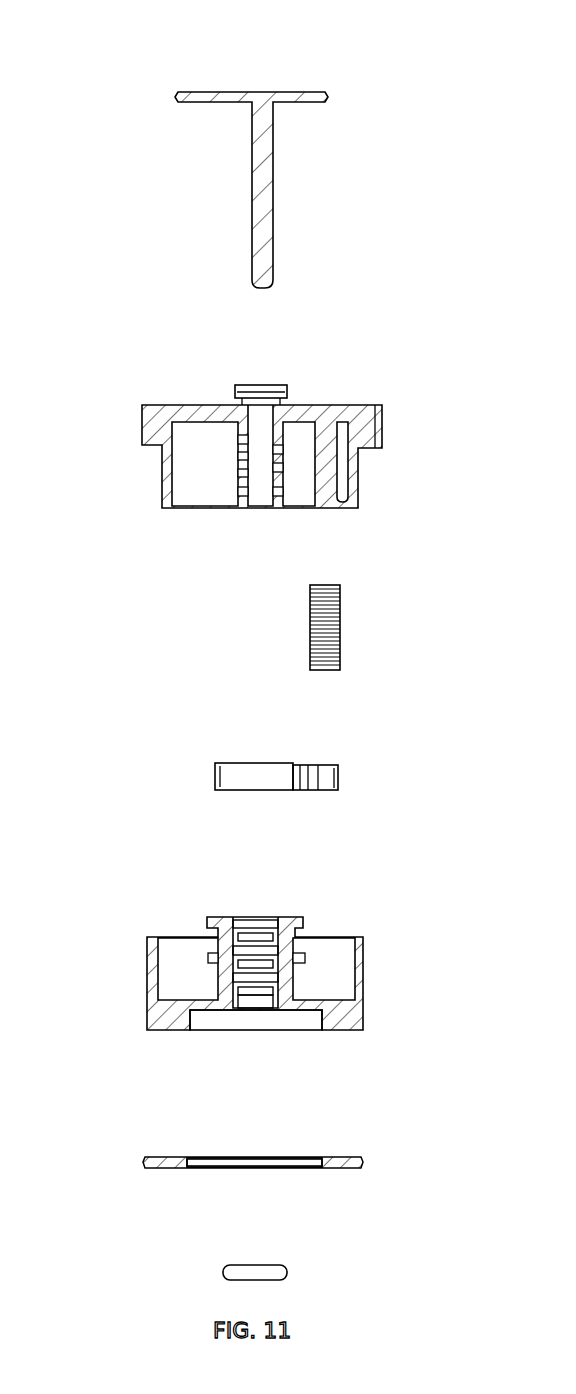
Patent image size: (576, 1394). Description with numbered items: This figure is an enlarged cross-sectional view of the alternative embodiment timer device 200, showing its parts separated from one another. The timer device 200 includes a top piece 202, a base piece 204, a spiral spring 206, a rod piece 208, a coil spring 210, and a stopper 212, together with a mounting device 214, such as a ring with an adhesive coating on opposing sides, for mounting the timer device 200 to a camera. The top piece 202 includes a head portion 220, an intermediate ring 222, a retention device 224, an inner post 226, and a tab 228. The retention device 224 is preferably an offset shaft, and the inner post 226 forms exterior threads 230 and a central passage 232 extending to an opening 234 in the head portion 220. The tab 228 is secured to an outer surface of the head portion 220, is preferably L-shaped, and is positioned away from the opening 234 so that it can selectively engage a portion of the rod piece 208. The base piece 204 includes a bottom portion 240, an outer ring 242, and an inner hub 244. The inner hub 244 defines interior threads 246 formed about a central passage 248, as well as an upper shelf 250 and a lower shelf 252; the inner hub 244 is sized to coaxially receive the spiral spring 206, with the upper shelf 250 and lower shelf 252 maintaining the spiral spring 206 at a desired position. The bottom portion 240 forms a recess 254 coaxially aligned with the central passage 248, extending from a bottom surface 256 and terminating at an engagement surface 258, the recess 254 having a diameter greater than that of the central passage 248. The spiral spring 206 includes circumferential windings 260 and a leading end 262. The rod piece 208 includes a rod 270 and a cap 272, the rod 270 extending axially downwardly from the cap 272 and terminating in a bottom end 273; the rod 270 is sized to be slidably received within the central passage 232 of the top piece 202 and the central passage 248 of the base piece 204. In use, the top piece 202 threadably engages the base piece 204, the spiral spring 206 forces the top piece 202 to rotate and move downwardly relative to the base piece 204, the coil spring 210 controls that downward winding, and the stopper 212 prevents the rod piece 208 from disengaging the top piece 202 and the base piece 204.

The timer device 200 is at (392, 45).
The top piece 202 is at (113, 466).
The base piece 204 is at (120, 998).
The spiral spring 206 is at (185, 780).
The rod piece 208 is at (190, 222).
The coil spring 210 is at (268, 640).
The stopper 212 is at (212, 1272).
The mounting device 214 is at (125, 1162).
The head portion 220 is at (164, 409).
The intermediate ring 222 is at (162, 493).
The retention device 224 is at (327, 499).
The inner post 226 is at (285, 431).
The tab 228 is at (259, 382).
The exterior threads 230 is at (283, 478).
The central passage 232 is at (250, 500).
The opening 234 is at (281, 404).
The bottom portion 240 is at (350, 1023).
The outer ring 242 is at (361, 975).
The inner hub 244 is at (298, 977).
The interior threads 246 is at (271, 915).
The central passage 248 is at (238, 1002).
The upper shelf 250 is at (279, 940).
The lower shelf 252 is at (212, 958).
The recess 254 is at (189, 1018).
The bottom surface 256 is at (347, 1028).
The engagement surface 258 is at (300, 1011).
The circumferential windings 260 is at (226, 765).
The leading end 262 is at (326, 769).
The rod 270 is at (268, 199).
The cap 272 is at (241, 96).
The bottom end 273 is at (262, 288).